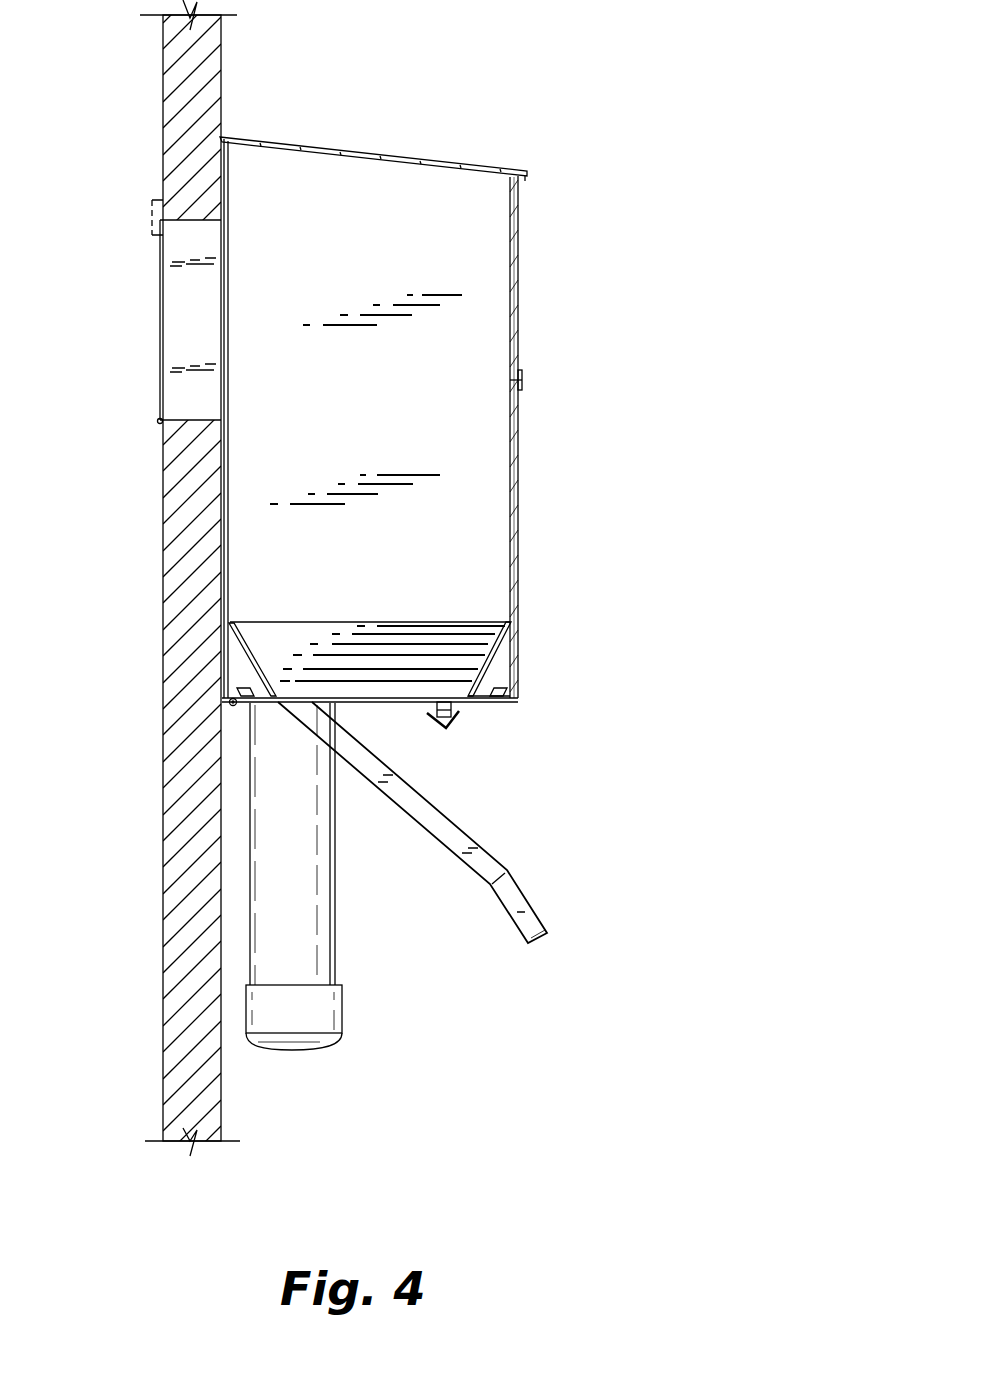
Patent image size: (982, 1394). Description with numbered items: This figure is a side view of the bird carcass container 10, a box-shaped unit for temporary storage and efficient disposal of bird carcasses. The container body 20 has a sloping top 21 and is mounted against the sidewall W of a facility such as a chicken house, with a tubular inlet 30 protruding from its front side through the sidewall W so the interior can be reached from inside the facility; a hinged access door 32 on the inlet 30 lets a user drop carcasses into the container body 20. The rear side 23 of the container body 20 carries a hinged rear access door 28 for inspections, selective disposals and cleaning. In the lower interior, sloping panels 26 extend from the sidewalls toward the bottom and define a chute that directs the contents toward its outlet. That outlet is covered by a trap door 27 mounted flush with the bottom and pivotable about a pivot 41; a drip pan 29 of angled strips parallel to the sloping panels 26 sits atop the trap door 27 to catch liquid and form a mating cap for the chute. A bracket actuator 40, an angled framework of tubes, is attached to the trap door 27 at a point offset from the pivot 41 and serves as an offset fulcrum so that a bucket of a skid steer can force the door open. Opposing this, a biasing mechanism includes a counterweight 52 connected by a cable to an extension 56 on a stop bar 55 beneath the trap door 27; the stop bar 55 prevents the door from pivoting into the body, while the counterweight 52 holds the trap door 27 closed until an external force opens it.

The bird carcass container 10 is at (742, 64).
The container body 20 is at (562, 472).
The sloping top 21 is at (452, 162).
The rear side 23 is at (518, 557).
The sloping panels 26 is at (290, 645).
The trap door 27 is at (513, 700).
The rear access door 28 is at (518, 315).
The drip pan 29 is at (520, 683).
The inlet 30 is at (190, 322).
The access door 32 is at (160, 298).
The bracket actuator 40 is at (552, 873).
The pivot 41 is at (230, 702).
The counterweight 52 is at (337, 915).
The stop bar 55 is at (430, 716).
The extension 56 is at (447, 729).
The sidewall W is at (160, 830).